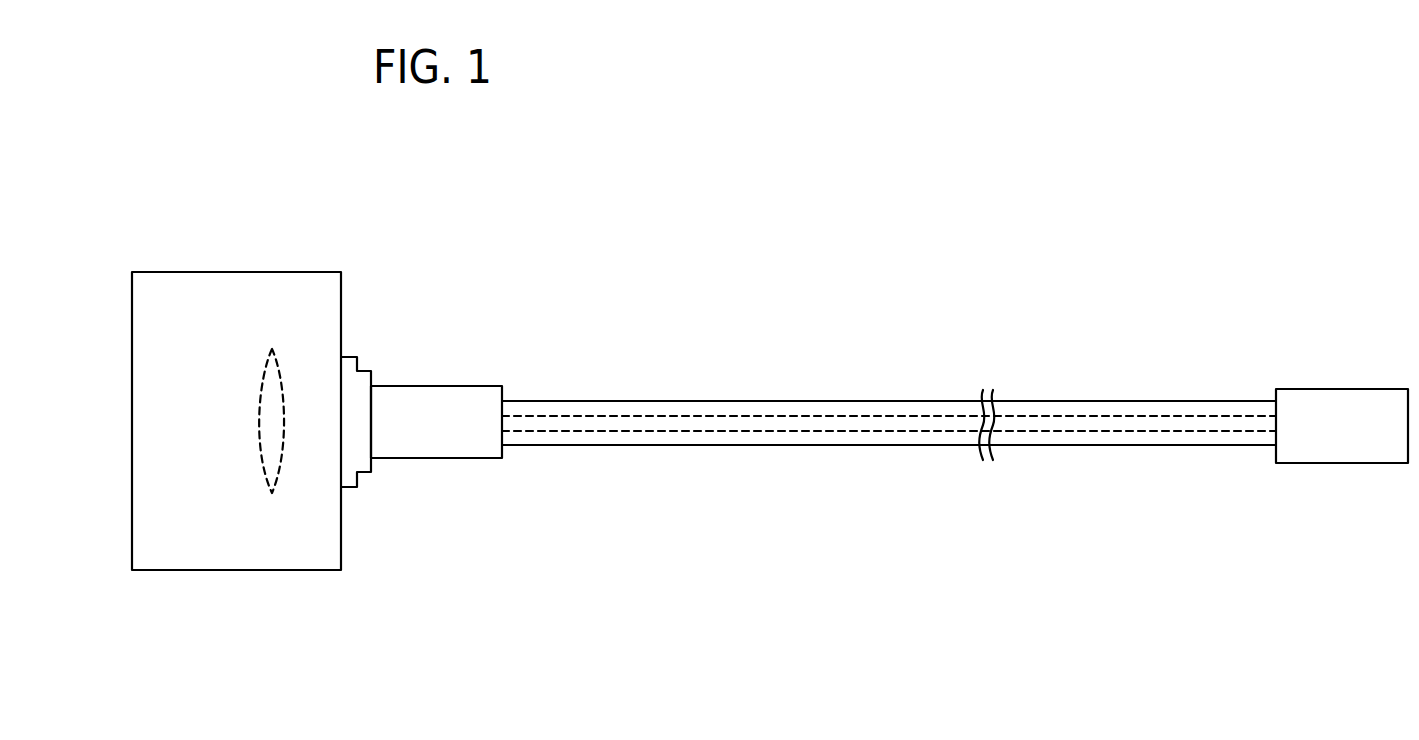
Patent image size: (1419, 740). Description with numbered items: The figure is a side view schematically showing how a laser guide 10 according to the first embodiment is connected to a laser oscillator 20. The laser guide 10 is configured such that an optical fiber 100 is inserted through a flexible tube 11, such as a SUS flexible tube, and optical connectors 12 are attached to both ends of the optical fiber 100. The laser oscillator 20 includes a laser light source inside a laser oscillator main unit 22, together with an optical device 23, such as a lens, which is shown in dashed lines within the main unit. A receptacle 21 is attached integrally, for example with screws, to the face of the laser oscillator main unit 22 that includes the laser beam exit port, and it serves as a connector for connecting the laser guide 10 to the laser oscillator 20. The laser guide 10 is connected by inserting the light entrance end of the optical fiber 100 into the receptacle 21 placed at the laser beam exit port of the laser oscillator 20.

The laser guide 10 is at (889, 385).
The flexible tube 11 is at (622, 400).
The optical connector 12 is at (438, 398).
The optical fiber 100 is at (643, 433).
The laser oscillator 20 is at (260, 396).
The receptacle 21 is at (357, 488).
The laser oscillator main unit 22 is at (178, 560).
The optical device 23 is at (275, 380).